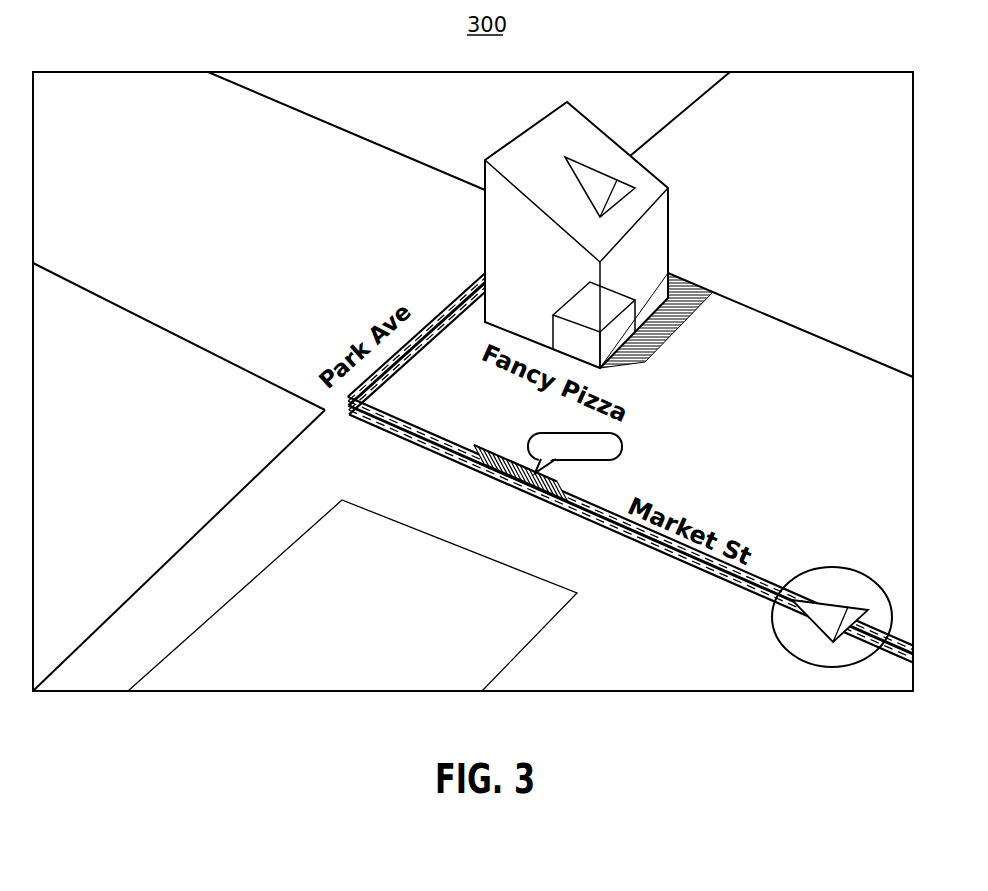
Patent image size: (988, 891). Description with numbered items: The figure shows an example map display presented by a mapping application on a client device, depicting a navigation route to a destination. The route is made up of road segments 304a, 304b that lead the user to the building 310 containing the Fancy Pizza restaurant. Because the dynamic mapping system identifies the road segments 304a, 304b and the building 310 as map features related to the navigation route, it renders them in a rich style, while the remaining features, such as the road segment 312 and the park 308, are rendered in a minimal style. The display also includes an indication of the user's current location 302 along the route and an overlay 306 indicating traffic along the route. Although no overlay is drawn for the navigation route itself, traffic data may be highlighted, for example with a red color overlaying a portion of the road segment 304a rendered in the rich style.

The current location 302 is at (832, 567).
The road segment 304a is at (637, 542).
The road segment 304b is at (445, 303).
The overlay 306 is at (487, 451).
The park 308 is at (363, 507).
The building 310 is at (667, 188).
The road segment 312 is at (198, 538).